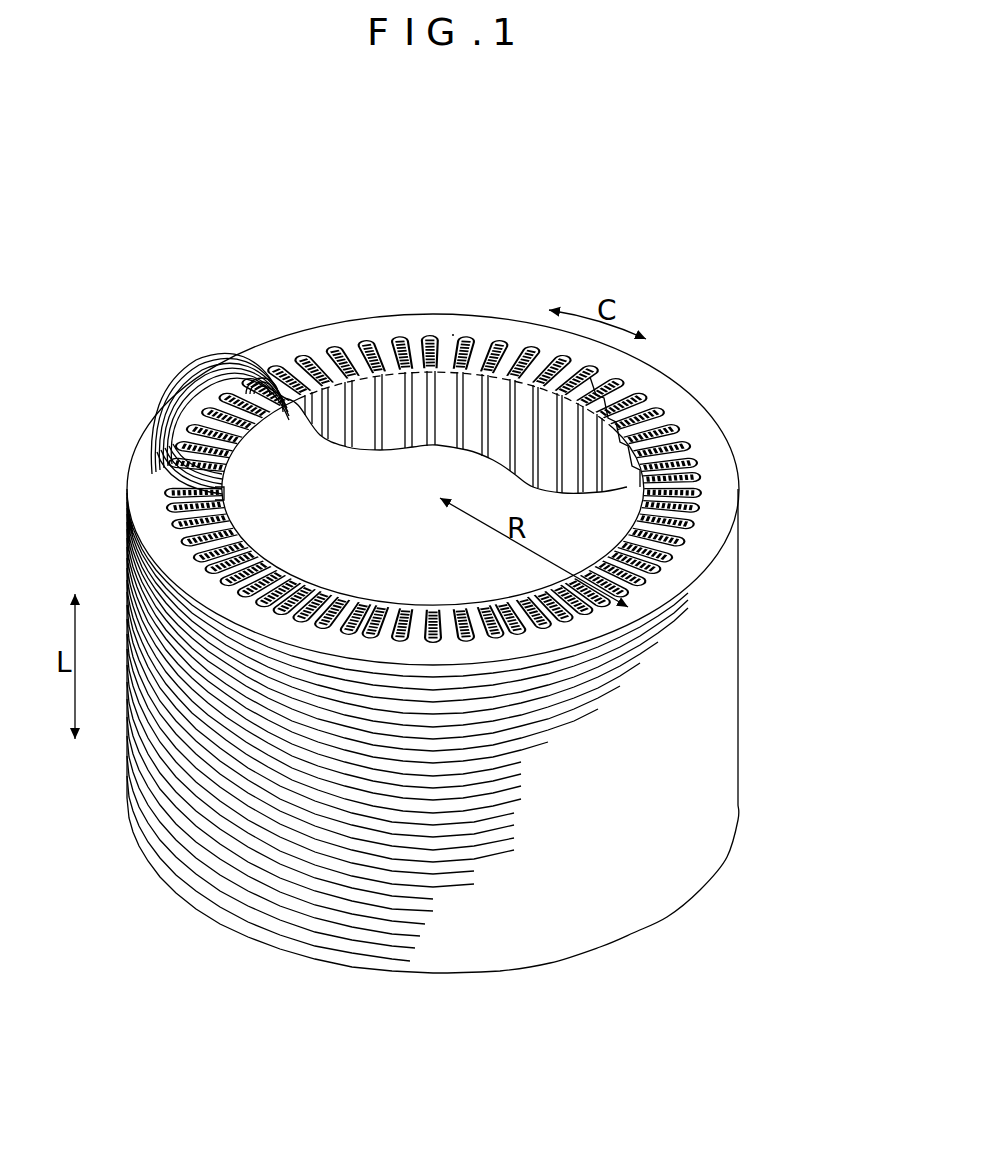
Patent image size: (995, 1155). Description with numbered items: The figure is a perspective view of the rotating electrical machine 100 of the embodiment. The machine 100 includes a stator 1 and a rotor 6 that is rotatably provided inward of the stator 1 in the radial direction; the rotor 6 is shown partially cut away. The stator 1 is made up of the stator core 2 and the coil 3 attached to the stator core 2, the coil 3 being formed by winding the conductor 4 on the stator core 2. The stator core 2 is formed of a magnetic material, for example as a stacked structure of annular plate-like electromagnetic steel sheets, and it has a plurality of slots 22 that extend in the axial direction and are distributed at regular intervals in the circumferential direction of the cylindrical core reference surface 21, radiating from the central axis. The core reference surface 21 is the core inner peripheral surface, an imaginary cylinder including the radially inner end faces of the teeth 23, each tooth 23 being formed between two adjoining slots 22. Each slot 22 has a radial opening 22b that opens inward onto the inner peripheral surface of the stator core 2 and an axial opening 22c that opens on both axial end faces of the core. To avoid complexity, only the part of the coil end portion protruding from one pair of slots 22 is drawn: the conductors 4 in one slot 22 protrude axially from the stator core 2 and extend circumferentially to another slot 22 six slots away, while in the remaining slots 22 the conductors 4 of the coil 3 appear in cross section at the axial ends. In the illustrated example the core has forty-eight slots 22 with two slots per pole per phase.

The rotating electrical machine 100 is at (445, 607).
The stator 1 is at (440, 607).
The stator core 2 is at (742, 690).
The coil 3 is at (173, 387).
The conductor 4 is at (364, 348).
The rotor 6 is at (703, 550).
The cylindrical core reference surface 21 is at (418, 394).
The slot 22 is at (498, 350).
The radial opening 22b is at (484, 392).
The axial opening 22c is at (166, 506).
The tooth 23 is at (448, 342).